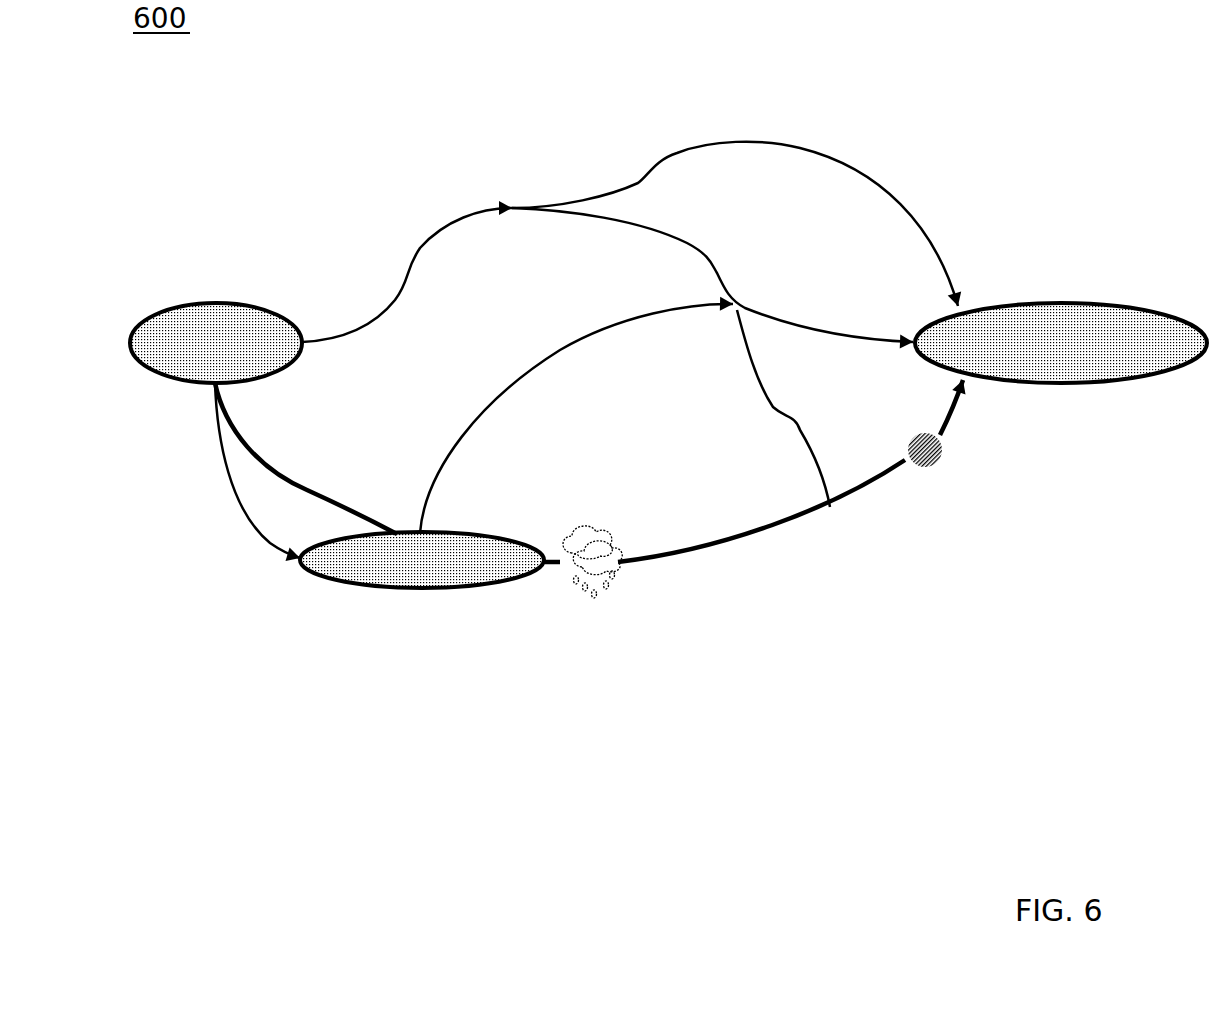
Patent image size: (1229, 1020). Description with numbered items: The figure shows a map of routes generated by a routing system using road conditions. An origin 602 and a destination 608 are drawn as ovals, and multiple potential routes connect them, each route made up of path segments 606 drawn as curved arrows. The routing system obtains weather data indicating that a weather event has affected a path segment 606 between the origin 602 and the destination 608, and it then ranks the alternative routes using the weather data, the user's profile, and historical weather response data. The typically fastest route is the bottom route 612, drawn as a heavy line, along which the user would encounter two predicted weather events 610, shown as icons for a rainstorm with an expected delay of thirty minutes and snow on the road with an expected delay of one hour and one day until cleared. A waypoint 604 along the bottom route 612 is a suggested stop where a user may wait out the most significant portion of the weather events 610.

The origin 602 is at (195, 305).
The waypoint 604 is at (455, 532).
The path segments 606 is at (348, 292).
The destination 608 is at (1080, 300).
The weather events 610 is at (618, 582).
The bottom route 612 is at (305, 490).